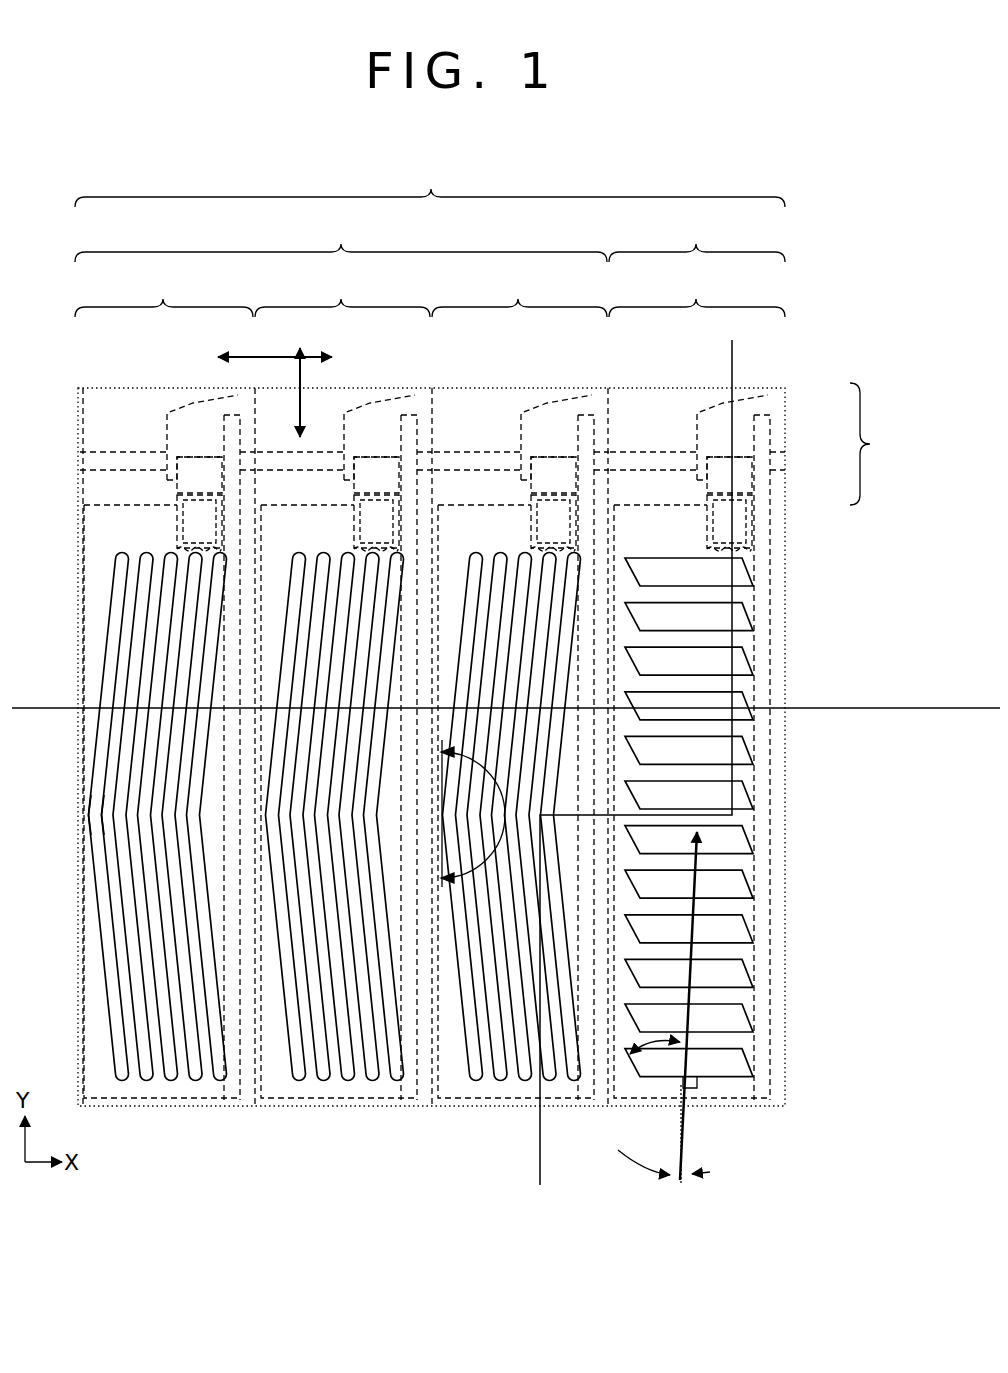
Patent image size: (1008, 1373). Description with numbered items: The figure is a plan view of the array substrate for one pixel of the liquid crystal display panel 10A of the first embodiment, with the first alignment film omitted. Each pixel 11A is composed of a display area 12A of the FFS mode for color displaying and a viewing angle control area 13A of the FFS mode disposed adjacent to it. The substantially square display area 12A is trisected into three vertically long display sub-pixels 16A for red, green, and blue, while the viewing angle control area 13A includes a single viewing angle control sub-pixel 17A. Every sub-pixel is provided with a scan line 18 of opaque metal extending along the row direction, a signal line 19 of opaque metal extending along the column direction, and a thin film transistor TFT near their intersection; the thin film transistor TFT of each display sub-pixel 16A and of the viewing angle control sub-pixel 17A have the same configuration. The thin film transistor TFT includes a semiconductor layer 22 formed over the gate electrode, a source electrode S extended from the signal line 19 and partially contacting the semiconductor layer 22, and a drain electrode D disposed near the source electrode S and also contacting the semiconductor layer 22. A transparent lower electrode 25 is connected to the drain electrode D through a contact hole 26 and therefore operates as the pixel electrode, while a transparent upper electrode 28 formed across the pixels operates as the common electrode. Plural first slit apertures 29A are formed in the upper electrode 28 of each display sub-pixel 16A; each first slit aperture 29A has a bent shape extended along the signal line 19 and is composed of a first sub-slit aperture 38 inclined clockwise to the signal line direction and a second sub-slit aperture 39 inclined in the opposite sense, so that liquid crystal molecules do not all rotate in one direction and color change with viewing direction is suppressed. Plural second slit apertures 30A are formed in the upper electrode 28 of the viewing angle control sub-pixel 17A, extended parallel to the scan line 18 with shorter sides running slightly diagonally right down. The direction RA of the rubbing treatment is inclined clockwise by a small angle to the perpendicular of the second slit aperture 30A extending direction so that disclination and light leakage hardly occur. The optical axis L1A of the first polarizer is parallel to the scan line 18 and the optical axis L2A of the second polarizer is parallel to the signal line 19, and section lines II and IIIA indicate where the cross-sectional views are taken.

The liquid crystal display panel 10A is at (124, 154).
The pixel 11A is at (430, 182).
The display area 12A is at (341, 237).
The viewing angle control area 13A is at (697, 237).
The display sub-pixel 16A is at (341, 292).
The viewing angle control sub-pixel 17A is at (697, 292).
The scan line 18 is at (116, 456).
The signal line 19 is at (777, 578).
The semiconductor layer 22 is at (738, 447).
The lower electrode 25 is at (82, 1018).
The contact hole 26 is at (737, 520).
The upper electrode 28 is at (112, 540).
The first slit aperture 29A is at (88, 813).
The second slit aperture 30A is at (733, 1062).
The first sub-slit aperture 38 is at (107, 668).
The second sub-slit aperture 39 is at (105, 958).
The source electrode S is at (733, 428).
The drain electrode D is at (738, 467).
The thin film transistor TFT is at (883, 444).
The optical axis of the first polarizer L1A is at (290, 350).
The optical axis of the second polarizer L2A is at (289, 427).
The section line II is at (738, 354).
The section line IIIA is at (32, 714).
The direction of the rubbing treatment RA is at (675, 1008).